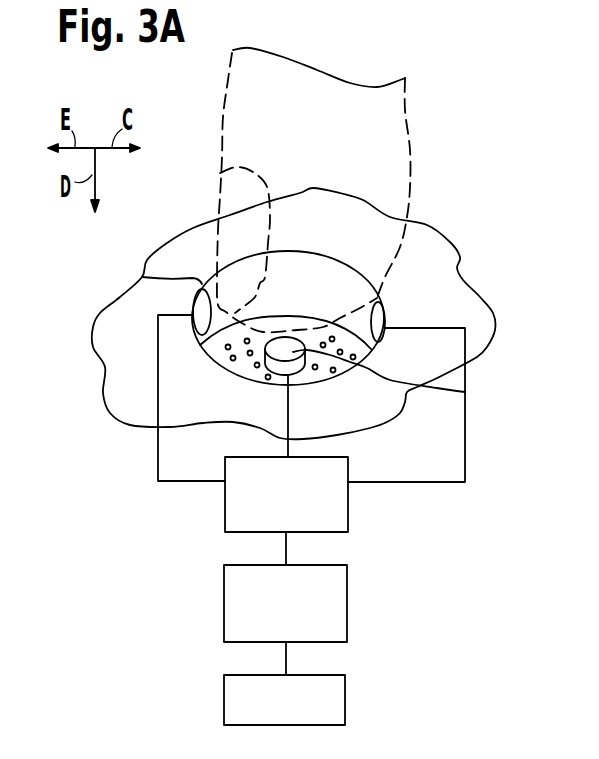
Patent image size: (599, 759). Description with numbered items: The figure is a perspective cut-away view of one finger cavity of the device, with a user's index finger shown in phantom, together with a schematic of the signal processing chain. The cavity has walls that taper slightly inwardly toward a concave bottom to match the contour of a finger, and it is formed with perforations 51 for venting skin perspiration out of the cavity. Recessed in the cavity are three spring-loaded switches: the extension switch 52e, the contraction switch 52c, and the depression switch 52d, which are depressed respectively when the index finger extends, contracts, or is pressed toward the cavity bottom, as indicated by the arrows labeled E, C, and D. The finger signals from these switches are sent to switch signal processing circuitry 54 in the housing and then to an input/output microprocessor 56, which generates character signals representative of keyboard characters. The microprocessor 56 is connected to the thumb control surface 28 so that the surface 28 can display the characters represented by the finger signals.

The perforations 51 is at (229, 359).
The contraction switch 52c is at (377, 298).
The depression switch 52d is at (465, 392).
The extension switch 52e is at (142, 277).
The switch signal processing circuitry 54 is at (225, 508).
The input/output (I/O) microprocessor 56 is at (224, 590).
The thumb control surface 28 is at (224, 690).